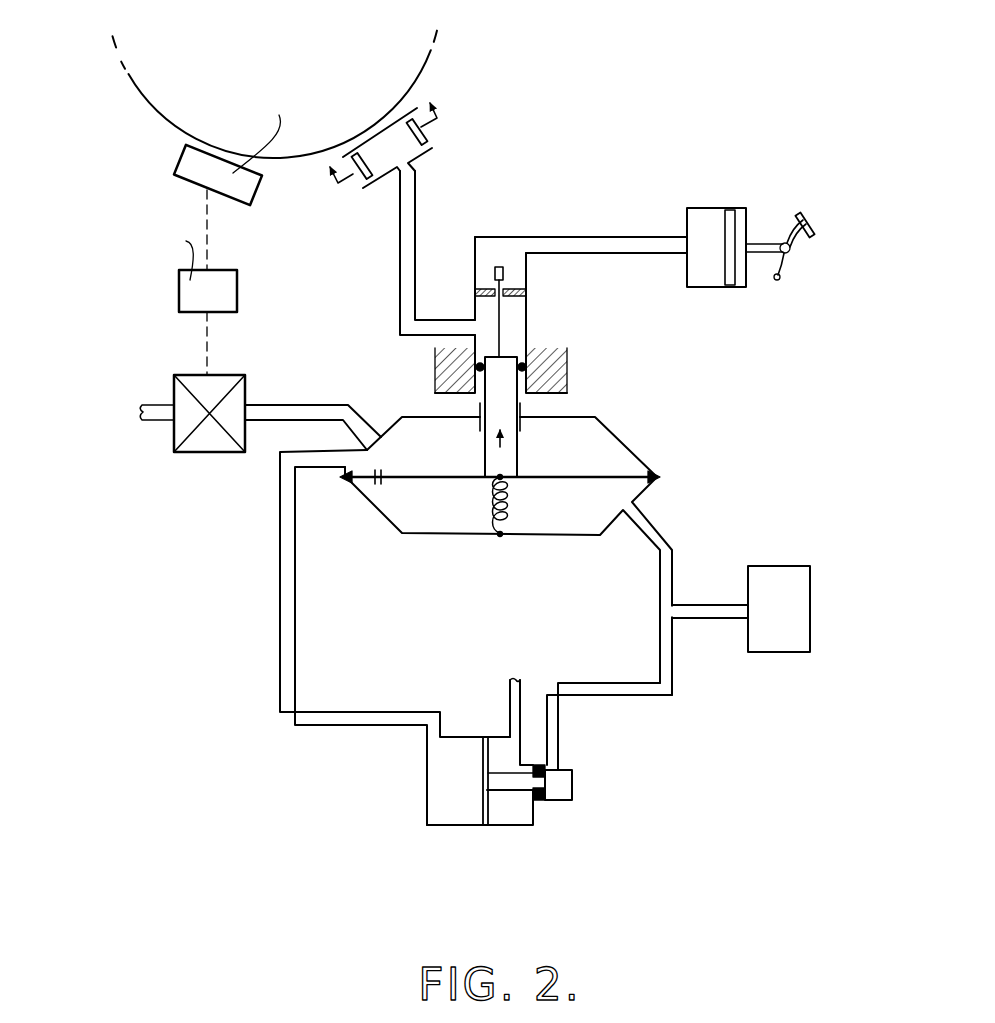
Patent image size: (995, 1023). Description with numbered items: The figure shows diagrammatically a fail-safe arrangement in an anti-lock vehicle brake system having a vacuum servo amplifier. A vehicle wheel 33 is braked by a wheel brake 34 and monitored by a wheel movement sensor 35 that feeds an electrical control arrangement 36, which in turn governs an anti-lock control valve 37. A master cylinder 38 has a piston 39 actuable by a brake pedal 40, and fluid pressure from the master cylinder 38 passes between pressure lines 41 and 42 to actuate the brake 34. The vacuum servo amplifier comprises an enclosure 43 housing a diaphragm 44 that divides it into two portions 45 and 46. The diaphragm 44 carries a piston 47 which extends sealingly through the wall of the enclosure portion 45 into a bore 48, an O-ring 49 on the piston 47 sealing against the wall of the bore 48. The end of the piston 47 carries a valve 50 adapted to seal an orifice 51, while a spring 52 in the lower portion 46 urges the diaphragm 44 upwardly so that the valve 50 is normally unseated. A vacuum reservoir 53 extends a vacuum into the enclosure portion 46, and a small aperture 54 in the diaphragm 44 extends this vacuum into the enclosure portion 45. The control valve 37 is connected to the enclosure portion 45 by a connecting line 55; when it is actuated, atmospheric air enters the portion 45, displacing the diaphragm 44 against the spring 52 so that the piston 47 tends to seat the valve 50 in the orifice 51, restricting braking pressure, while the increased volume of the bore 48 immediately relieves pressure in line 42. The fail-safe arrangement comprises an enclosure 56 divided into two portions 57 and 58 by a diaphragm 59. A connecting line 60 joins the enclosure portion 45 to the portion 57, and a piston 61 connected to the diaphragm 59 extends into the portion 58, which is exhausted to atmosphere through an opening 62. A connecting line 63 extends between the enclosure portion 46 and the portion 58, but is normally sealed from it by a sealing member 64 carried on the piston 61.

The vehicle wheel 33 is at (301, 160).
The wheel brake 34 is at (433, 147).
The wheel movement sensor 35 is at (240, 192).
The electrical control arrangement 36 is at (238, 292).
The anti-lock control valve 37 is at (215, 385).
The master cylinder 38 is at (707, 207).
The piston 39 is at (732, 287).
The brake pedal 40 is at (796, 232).
The pressure line 41 is at (610, 240).
The pressure line 42 is at (410, 270).
The enclosure 43 is at (640, 445).
The diaphragm 44 is at (562, 478).
The enclosure portion 45 is at (434, 445).
The enclosure portion 46 is at (436, 497).
The piston 47 is at (518, 454).
The bore 48 is at (507, 350).
The O-ring 49 is at (526, 367).
The valve 50 is at (505, 272).
The orifice 51 is at (505, 293).
The spring 52 is at (510, 507).
The vacuum reservoir 53 is at (810, 631).
The aperture 54 is at (385, 478).
The connecting line 55 is at (330, 408).
The enclosure 56 is at (440, 828).
The enclosure portion 57 is at (454, 795).
The enclosure portion 58 is at (509, 808).
The diaphragm 59 is at (496, 826).
The connecting line 60 is at (297, 655).
The piston 61 is at (530, 783).
The opening 62 is at (510, 710).
The connecting line 63 is at (668, 665).
The sealing member 64 is at (562, 771).